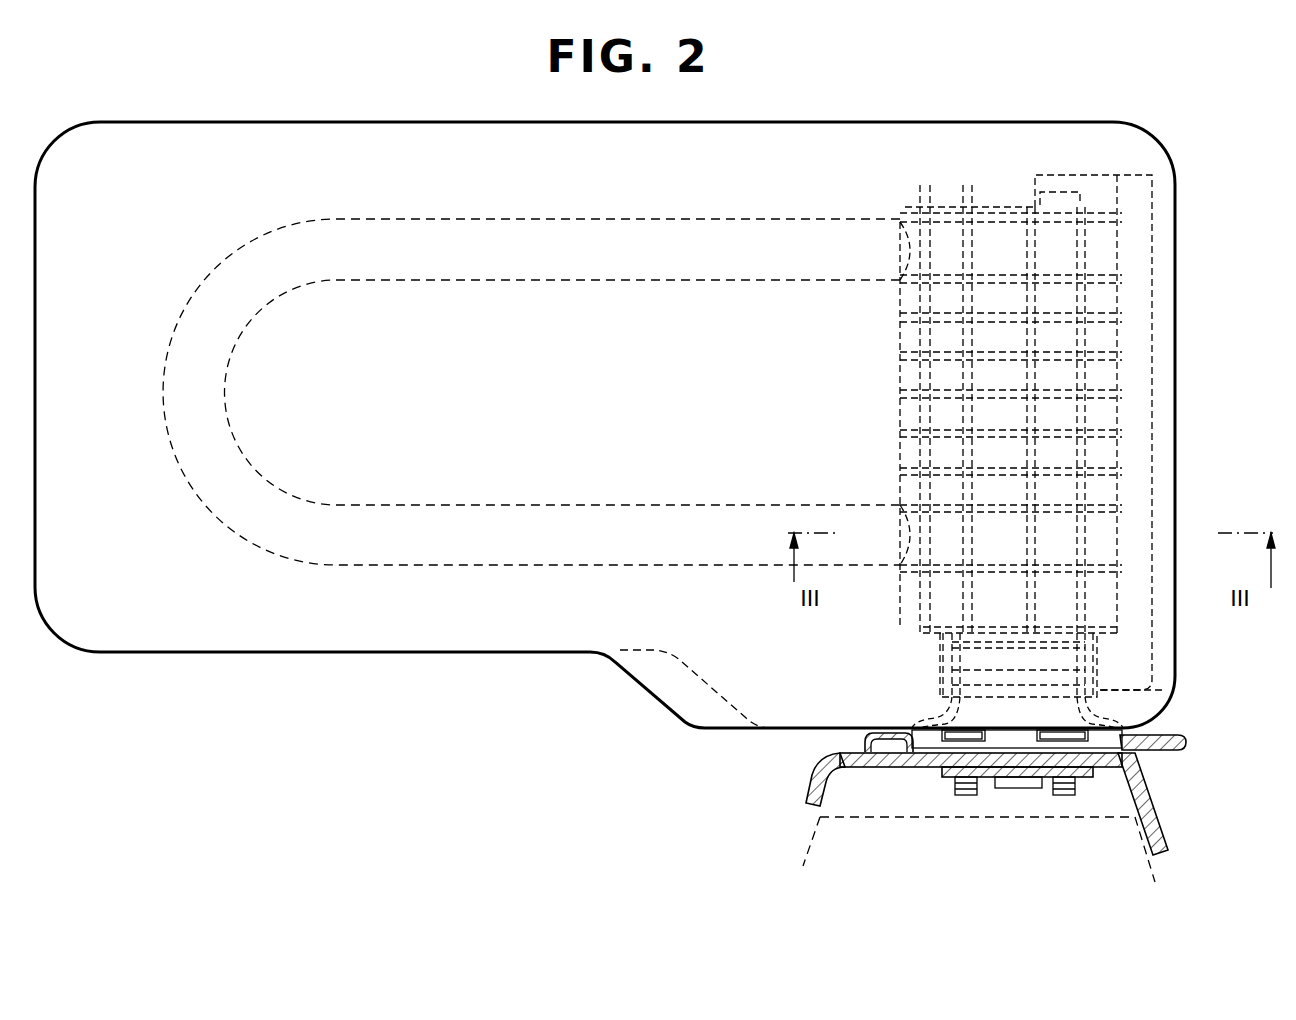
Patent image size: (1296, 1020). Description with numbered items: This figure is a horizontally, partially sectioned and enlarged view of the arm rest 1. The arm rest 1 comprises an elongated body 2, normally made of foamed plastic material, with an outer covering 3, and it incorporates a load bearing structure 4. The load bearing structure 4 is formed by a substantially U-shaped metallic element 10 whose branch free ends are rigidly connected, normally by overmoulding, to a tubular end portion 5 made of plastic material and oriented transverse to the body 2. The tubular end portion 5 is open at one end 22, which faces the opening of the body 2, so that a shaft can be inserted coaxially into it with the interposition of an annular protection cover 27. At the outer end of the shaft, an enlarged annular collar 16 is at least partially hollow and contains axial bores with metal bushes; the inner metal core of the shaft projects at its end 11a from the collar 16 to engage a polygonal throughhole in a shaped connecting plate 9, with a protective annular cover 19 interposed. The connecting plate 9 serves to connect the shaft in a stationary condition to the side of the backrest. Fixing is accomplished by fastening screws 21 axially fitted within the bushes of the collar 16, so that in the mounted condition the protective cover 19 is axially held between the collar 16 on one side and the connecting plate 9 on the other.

The arm rest 1 is at (455, 110).
The elongated body 2 is at (337, 122).
The outer covering 3 is at (218, 164).
The load bearing structure 4 is at (853, 212).
The U-shaped metallic element 10 is at (763, 225).
The tubular end portion 5 is at (1100, 292).
The annular protection cover 27 is at (918, 725).
The open end 22 is at (1165, 684).
The enlarged annular collar 16 is at (934, 742).
The protective annular cover 19 is at (875, 740).
The shaped connecting plate 9 is at (1140, 774).
The end of the metal core 11a is at (1025, 790).
The fastening screws 21 is at (968, 795).